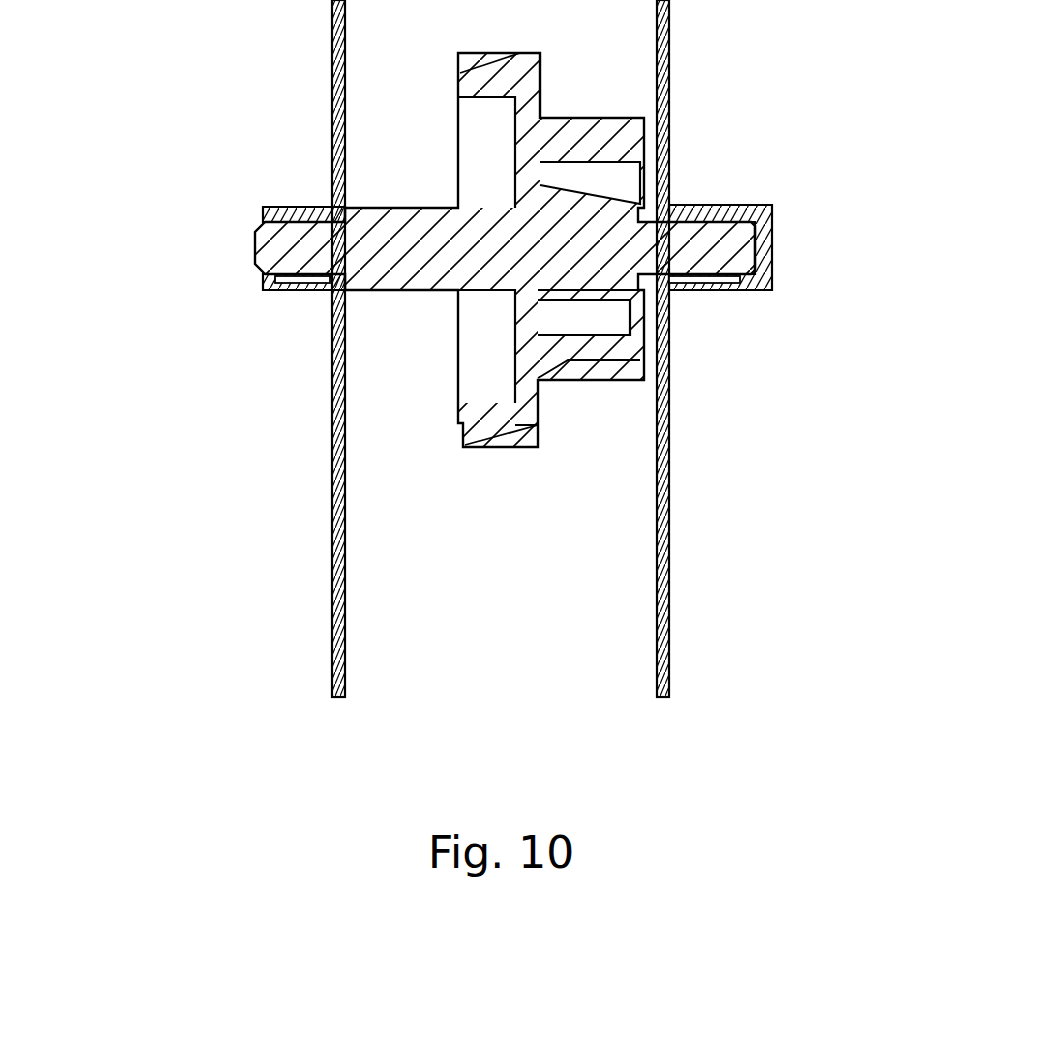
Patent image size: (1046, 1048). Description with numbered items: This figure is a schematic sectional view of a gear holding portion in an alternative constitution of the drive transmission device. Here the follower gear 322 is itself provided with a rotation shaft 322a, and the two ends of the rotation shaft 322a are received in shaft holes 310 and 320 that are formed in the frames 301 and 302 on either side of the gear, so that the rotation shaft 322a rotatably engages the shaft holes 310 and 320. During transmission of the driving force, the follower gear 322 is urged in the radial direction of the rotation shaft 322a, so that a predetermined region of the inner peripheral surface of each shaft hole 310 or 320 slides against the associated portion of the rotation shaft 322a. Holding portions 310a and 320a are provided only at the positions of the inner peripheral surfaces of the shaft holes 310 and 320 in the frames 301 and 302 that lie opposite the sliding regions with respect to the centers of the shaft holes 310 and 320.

The frame 301 is at (333, 627).
The frame 302 is at (668, 640).
The shaft hole 310 is at (285, 214).
The holding portion 310a is at (290, 284).
The shaft hole 320 is at (732, 210).
The holding portion 320a is at (738, 291).
The follower gear 322 is at (495, 424).
The rotation shaft 322a is at (285, 245).